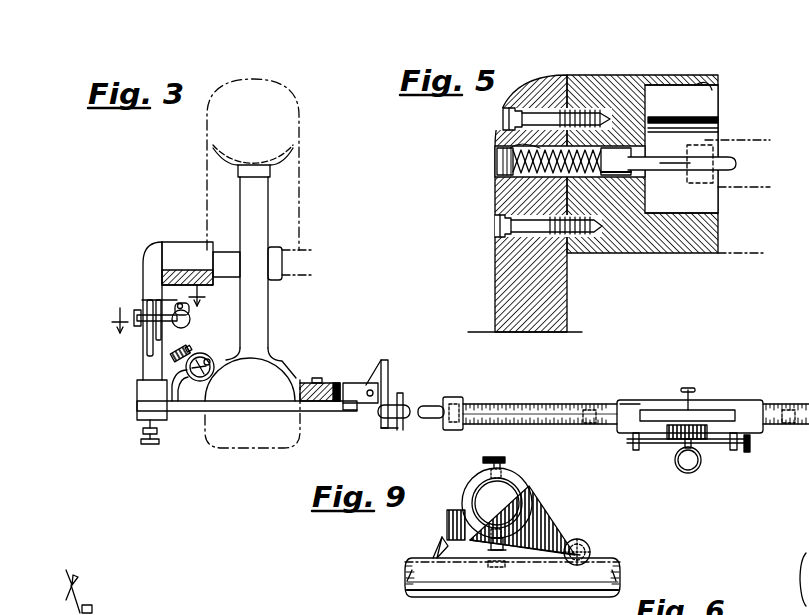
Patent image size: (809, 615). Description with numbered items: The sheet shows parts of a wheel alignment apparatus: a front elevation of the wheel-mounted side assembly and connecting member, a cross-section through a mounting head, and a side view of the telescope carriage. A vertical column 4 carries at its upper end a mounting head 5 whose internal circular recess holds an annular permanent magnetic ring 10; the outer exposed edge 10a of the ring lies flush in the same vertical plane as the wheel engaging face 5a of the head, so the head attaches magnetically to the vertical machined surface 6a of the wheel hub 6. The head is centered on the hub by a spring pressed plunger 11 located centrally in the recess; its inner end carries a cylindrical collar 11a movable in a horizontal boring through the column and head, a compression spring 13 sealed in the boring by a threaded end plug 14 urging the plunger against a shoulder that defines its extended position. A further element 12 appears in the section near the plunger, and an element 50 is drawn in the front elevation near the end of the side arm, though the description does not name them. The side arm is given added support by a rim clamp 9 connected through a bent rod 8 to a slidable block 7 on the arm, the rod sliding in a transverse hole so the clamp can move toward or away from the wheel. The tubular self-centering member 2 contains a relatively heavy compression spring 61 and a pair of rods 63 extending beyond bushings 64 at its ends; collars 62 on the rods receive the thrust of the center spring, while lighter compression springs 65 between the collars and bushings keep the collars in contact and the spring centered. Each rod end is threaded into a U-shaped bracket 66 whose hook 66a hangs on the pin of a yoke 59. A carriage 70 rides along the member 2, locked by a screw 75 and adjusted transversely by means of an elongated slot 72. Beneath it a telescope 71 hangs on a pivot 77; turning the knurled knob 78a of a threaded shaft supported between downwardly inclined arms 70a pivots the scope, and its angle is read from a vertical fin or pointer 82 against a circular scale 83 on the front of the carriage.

In FIG. 3, the tubular self-centering member 2 is at (538, 403).
In FIG. 9, the tubular self-centering member 2 is at (472, 500).
In FIG. 3, the vertical column 4 is at (143, 258).
In FIG. 5, the vertical column 4 is at (494, 282).
In FIG. 3, the mounting head 5 is at (180, 248).
In FIG. 5, the mounting head 5 is at (640, 78).
In FIG. 5, the wheel engaging face 5a is at (720, 92).
In FIG. 3, the wheel hub 6 is at (225, 258).
In FIG. 5, the wheel hub 6 is at (753, 257).
In FIG. 5, the vertical machined surface 6a is at (700, 86).
In FIG. 3, the slidable block 7 is at (140, 396).
In FIG. 3, the bent rod 8 is at (172, 380).
In FIG. 3, the rim clamp 9 is at (219, 357).
In FIG. 5, the annular permanent magnetic ring 10 is at (686, 218).
In FIG. 5, the outer exposed edge 10a is at (722, 237).
In FIG. 3, the spring pressed plunger 11 is at (157, 320).
In FIG. 5, the spring pressed plunger 11 is at (673, 170).
In FIG. 5, the cylindrical collar 11a is at (690, 180).
In FIG. 5, the plate 12 is at (712, 142).
In FIG. 5, the compression spring 13 is at (500, 150).
In FIG. 5, the threaded end plug 14 is at (500, 172).
In FIG. 3, the clamp 50 is at (336, 402).
In FIG. 3, the yoke 59 is at (364, 384).
In FIG. 3, the compression spring 61 is at (626, 400).
In FIG. 3, the collar 62 is at (589, 424).
In FIG. 3, the rod 63 is at (427, 400).
In FIG. 3, the bushing 64 is at (455, 397).
In FIG. 3, the compression spring 65 is at (535, 424).
In FIG. 3, the U-shaped bracket 66 is at (385, 431).
In FIG. 3, the hook 66a is at (381, 361).
In FIG. 3, the carriage 70 is at (730, 398).
In FIG. 9, the carriage 70 is at (467, 486).
In FIG. 9, the downwardly inclined arm 70a is at (545, 509).
In FIG. 3, the telescope 71 is at (698, 464).
In FIG. 9, the telescope 71 is at (418, 572).
In FIG. 3, the elongated slot 72 is at (657, 409).
In FIG. 9, the screw 75 is at (507, 460).
In FIG. 9, the pivot 77 is at (503, 553).
In FIG. 9, the knurled knob 78a is at (590, 548).
In FIG. 9, the vertical fin or pointer 82 is at (438, 545).
In FIG. 3, the circular scale 83 is at (672, 440).
In FIG. 9, the circular scale 83 is at (447, 519).